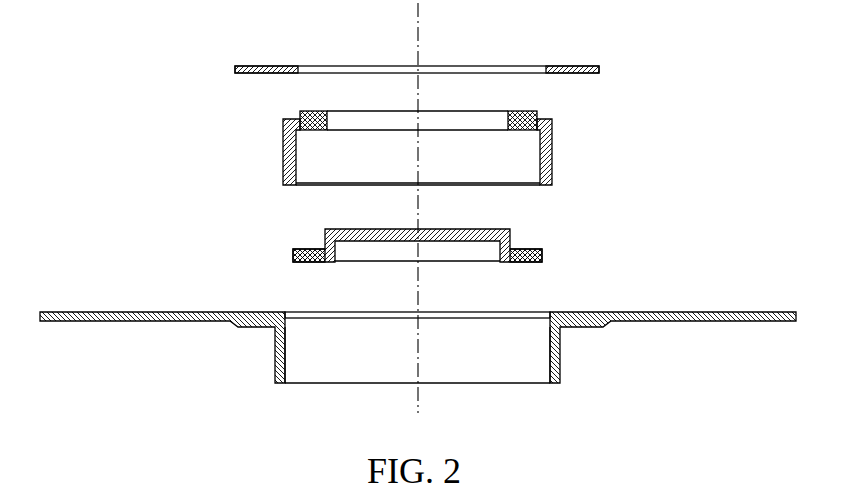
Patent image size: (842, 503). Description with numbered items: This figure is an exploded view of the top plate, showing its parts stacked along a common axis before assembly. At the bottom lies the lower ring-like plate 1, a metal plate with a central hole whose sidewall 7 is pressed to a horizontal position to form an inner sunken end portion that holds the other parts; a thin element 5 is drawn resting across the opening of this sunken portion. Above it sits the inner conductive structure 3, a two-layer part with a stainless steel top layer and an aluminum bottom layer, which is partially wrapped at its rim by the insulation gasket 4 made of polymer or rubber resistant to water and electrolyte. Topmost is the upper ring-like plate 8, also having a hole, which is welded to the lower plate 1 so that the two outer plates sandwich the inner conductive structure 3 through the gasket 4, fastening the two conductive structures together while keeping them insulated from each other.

The lower ring-like plate 1 is at (675, 316).
The inner conductive structure 3 is at (513, 250).
The insulation gasket 4 is at (284, 125).
The sheet 5 is at (333, 318).
The sidewall 7 is at (503, 388).
The upper ring-like plate 8 is at (277, 69).